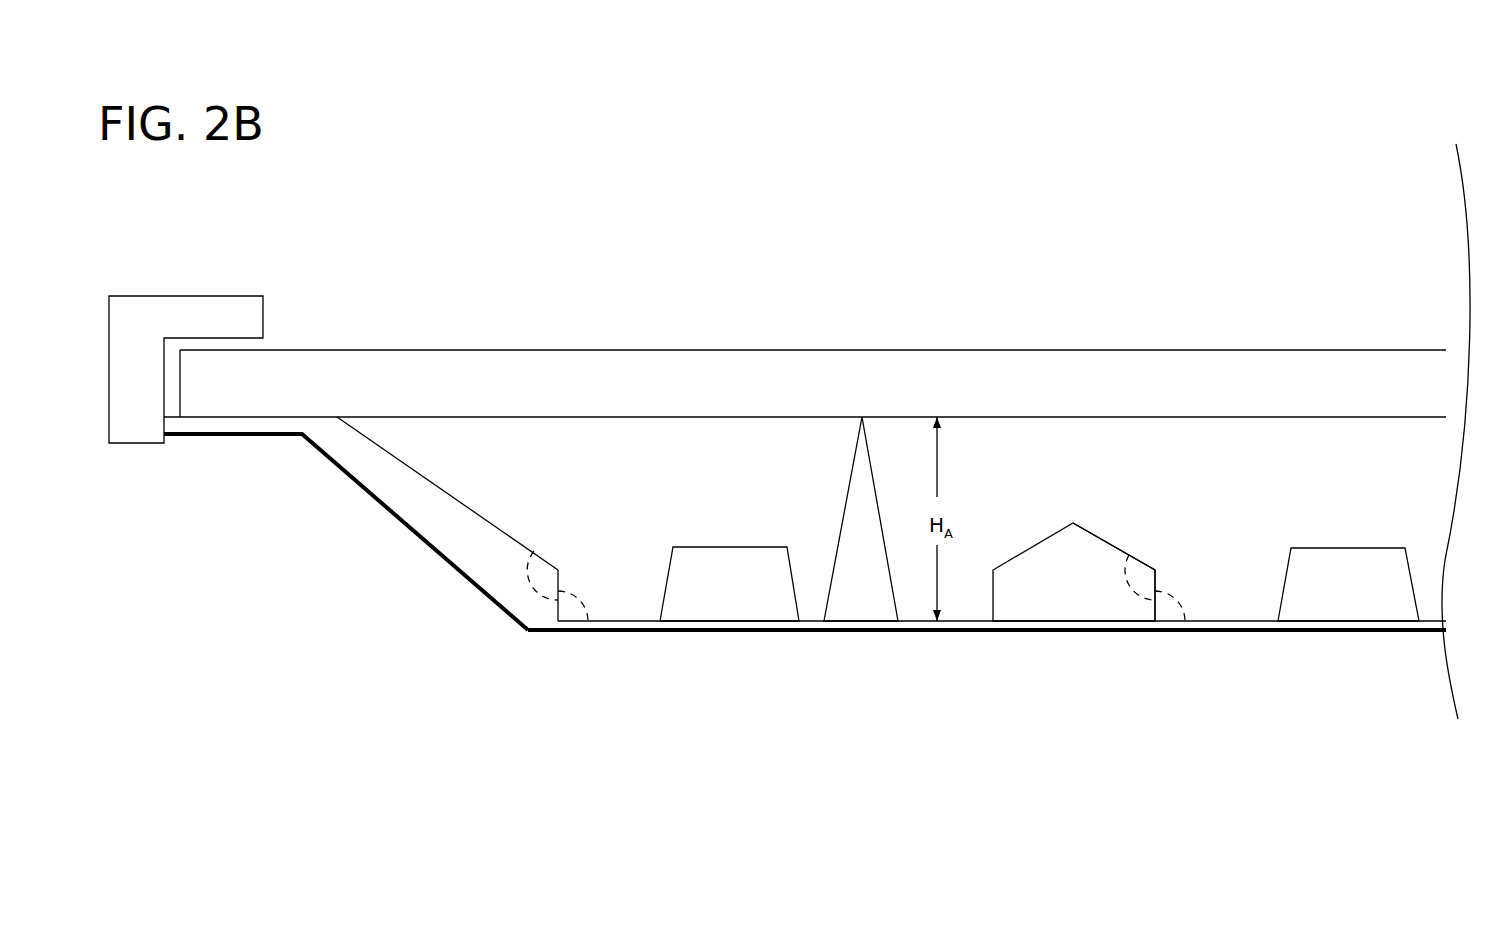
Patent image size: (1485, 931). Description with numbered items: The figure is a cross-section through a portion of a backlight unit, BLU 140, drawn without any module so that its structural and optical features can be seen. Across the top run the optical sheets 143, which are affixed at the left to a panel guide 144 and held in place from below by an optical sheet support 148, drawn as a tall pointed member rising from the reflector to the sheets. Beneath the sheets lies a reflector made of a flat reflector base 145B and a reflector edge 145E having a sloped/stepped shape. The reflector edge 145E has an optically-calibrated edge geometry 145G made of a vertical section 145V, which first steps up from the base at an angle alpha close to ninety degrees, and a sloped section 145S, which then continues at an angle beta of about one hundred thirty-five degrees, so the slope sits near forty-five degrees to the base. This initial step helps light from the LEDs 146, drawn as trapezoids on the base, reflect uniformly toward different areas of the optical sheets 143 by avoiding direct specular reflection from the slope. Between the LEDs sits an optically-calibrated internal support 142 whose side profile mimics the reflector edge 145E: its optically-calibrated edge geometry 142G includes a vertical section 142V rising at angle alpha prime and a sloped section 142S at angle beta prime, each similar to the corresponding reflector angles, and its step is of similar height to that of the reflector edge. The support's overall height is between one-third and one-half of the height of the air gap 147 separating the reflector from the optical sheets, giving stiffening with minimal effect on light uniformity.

The BLU 140 is at (140, 240).
The optically-calibrated internal support 142 is at (1053, 587).
The sloped section 142S is at (1100, 538).
The optically-calibrated edge geometry 142G is at (1165, 533).
The vertical section 142V is at (1157, 585).
The optical sheets 143 is at (798, 350).
The panel guide 144 is at (119, 443).
The reflector base 145B is at (1235, 622).
The reflector edge 145E is at (507, 592).
The optically-calibrated edge geometry 145G is at (557, 536).
The sloped section 145S is at (503, 531).
The vertical section 145V is at (560, 580).
The LED 146 is at (713, 596).
The air gap 147 is at (998, 463).
The optical sheet support 148 is at (859, 597).